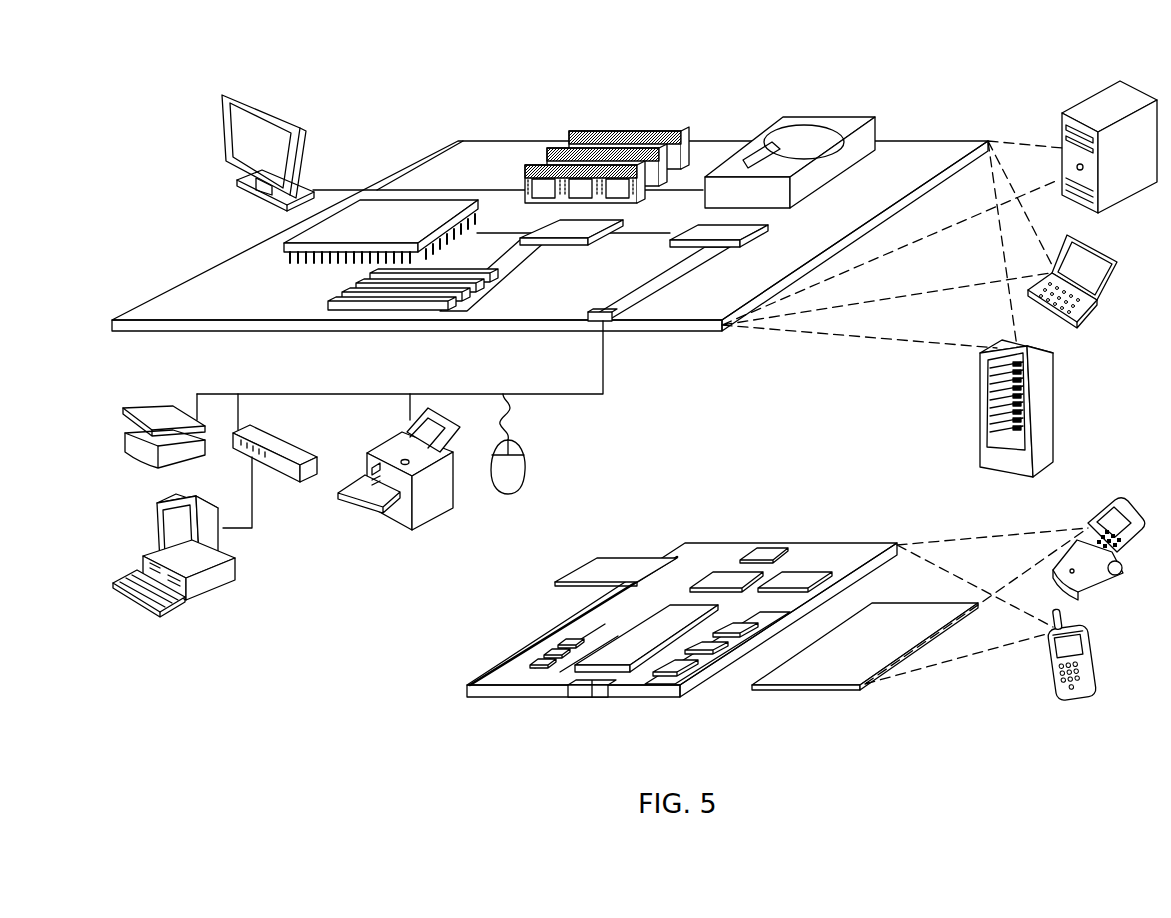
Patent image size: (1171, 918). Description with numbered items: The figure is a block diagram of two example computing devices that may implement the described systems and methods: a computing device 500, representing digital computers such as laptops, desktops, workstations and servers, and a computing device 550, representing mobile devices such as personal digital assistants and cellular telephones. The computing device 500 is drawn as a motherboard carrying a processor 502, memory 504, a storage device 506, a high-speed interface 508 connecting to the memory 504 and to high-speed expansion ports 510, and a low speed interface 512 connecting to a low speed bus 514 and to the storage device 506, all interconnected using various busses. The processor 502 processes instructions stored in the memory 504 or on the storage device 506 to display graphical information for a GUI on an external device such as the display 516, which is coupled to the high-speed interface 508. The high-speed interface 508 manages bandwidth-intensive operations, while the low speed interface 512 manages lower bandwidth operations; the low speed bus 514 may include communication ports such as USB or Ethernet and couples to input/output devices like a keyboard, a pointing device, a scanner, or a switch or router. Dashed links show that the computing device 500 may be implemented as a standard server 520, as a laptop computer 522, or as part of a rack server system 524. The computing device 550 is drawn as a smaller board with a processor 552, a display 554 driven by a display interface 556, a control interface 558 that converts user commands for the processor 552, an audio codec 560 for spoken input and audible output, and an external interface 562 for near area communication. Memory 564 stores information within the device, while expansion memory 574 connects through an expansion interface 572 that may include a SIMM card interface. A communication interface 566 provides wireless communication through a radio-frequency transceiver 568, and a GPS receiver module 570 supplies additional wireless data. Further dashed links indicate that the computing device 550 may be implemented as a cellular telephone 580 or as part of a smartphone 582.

The computing device 500 is at (393, 112).
The processor 502 is at (287, 245).
The memory 504 is at (580, 134).
The storage device 506 is at (779, 118).
The high-speed interface 508 is at (550, 232).
The high-speed expansion ports 510 is at (340, 300).
The low speed interface 512 is at (704, 233).
The low speed bus 514 is at (614, 322).
The display 516 is at (226, 95).
The standard server 520 is at (1062, 126).
The laptop computer 522 is at (1118, 262).
The rack server system 524 is at (980, 430).
The computing device 550 is at (447, 693).
The processor 552 is at (622, 660).
The display 554 is at (833, 680).
The display interface 556 is at (682, 666).
The control interface 558 is at (713, 650).
The audio codec 560 is at (730, 630).
The external interface 562 is at (592, 696).
The memory 564 is at (553, 650).
The communication interface 566 is at (727, 578).
The transceiver 568 is at (797, 577).
The GPS receiver module 570 is at (771, 548).
The expansion interface 572 is at (652, 556).
The expansion memory 574 is at (594, 556).
The cellular telephone 580 is at (1102, 503).
The smartphone 582 is at (1050, 668).